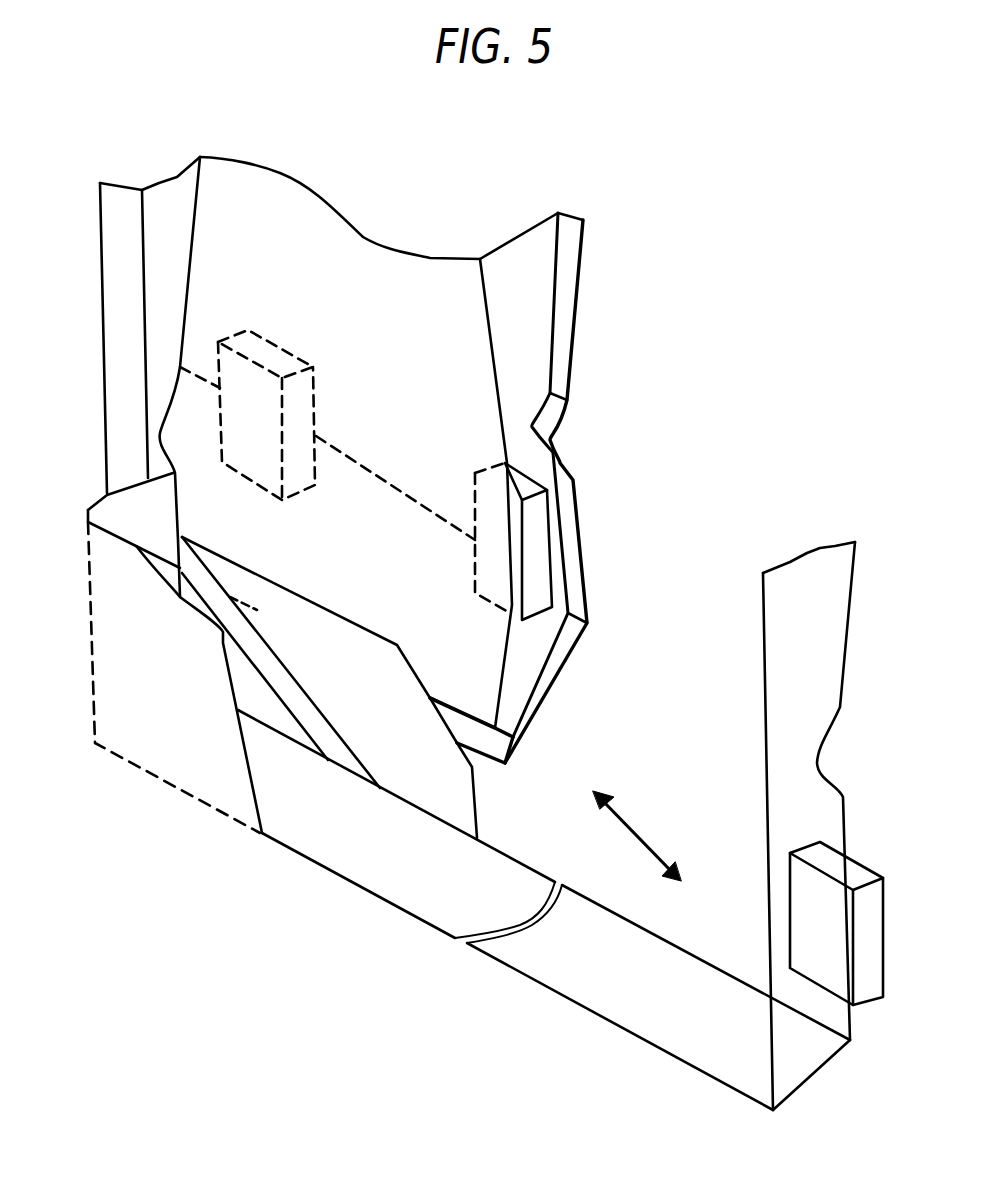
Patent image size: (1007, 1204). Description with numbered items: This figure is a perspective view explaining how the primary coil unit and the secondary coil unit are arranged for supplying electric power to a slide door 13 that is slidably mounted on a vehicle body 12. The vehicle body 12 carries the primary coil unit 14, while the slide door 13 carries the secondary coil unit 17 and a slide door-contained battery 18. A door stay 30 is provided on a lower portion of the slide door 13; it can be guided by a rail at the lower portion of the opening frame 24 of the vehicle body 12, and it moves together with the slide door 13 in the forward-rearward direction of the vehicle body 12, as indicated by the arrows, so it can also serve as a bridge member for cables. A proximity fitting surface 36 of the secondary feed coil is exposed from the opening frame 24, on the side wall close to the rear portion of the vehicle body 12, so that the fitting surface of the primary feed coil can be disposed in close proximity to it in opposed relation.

The vehicle body 12 is at (506, 858).
The slide door 13 is at (586, 259).
The primary coil unit 14 is at (818, 897).
The secondary coil unit 17 is at (537, 525).
The slide door-contained battery 18 is at (270, 352).
The opening frame 24 is at (122, 279).
The door stay 30 is at (393, 680).
The proximity fitting surface 36 is at (537, 572).